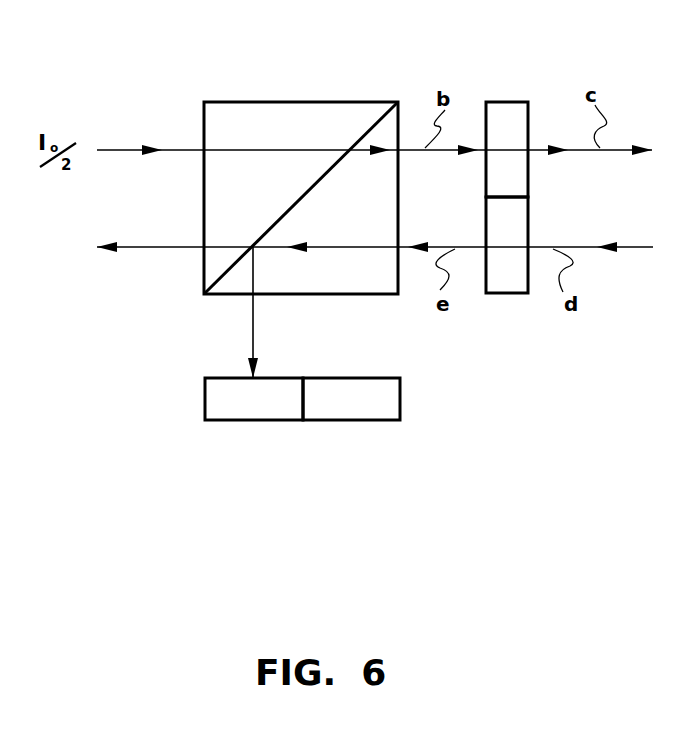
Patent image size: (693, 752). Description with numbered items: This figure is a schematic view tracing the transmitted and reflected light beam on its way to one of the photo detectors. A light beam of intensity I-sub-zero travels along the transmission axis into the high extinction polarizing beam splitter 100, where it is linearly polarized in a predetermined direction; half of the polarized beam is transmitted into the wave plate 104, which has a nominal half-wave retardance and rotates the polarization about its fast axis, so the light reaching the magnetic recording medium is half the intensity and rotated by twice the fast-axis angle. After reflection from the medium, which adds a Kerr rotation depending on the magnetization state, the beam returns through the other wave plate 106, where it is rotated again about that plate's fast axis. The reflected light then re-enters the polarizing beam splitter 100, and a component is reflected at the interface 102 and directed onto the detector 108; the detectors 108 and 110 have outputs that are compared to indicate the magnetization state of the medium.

The high extinction polarizing beam splitter 100 is at (275, 101).
The interface 102 is at (300, 198).
The wave plate 104 is at (506, 101).
The wave plate 106 is at (505, 294).
The photo detector 108 is at (205, 397).
The photo detector 110 is at (400, 397).